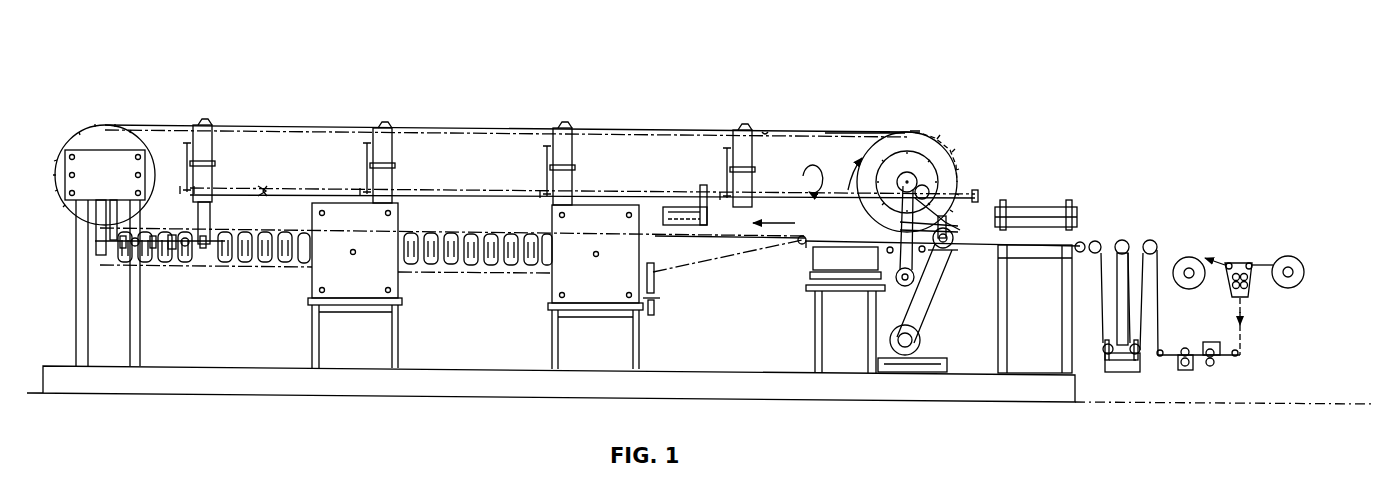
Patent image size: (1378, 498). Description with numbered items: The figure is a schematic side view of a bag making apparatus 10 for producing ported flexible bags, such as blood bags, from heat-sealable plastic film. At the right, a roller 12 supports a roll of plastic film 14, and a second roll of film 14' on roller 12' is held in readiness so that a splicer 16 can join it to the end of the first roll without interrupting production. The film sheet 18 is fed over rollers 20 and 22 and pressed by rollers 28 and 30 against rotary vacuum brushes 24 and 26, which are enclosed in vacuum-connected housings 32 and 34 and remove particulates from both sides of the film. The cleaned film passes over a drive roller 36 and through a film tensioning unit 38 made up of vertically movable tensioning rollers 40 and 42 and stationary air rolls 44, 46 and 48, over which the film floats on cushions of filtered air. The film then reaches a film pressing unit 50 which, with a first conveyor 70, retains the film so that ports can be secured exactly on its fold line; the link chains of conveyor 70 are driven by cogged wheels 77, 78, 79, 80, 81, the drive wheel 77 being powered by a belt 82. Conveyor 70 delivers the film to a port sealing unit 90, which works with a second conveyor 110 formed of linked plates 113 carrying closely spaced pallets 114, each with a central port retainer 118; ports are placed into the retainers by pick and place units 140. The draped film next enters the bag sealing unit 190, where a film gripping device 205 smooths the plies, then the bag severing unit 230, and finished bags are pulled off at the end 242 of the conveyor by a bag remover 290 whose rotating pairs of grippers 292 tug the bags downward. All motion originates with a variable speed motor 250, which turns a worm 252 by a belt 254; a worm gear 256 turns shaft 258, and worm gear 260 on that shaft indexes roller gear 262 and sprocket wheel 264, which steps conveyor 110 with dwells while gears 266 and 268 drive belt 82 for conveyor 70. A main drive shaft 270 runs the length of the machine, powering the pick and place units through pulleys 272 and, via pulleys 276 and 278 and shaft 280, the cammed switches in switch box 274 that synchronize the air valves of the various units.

The bag making apparatus 10 is at (188, 70).
The roller 12 is at (1299, 250).
The roller 12' is at (1183, 293).
The roll of plastic film 14 is at (1307, 263).
The second roll of film 14' is at (1213, 294).
The splicer 16 is at (1252, 297).
The film sheet 18 is at (742, 250).
The roller 20 is at (1249, 262).
The roller 22 is at (1237, 356).
The rotary vacuum brush 24 is at (1215, 360).
The rotary vacuum brush 26 is at (1185, 372).
The roller 28 is at (1212, 362).
The roller 30 is at (1174, 341).
The housing 32 is at (1220, 345).
The housing 34 is at (1190, 368).
The drive roller 36 is at (1160, 357).
The film tensioning unit 38 is at (1120, 372).
The tensioning roller 40 is at (1127, 352).
The tensioning roller 42 is at (1107, 354).
The stationary air roll 44 is at (1153, 240).
The stationary air roll 46 is at (1124, 240).
The stationary air roll 48 is at (1096, 240).
The film pressing unit 50 is at (1050, 207).
The first conveyor 70 is at (1008, 258).
The cogged drive wheel 77 is at (904, 286).
The cogged wheel 78 is at (884, 250).
The cogged wheel 79 is at (800, 246).
The cogged wheel 80 is at (895, 272).
The cogged wheel 81 is at (1080, 241).
The belt 82 is at (958, 228).
The port sealing unit 90 is at (806, 268).
The second conveyor 110 is at (790, 128).
The linked plates 113 is at (765, 130).
The pallet 114 is at (855, 133).
The port retainer 118 is at (878, 132).
The pick and place unit 140 is at (206, 121).
The bag sealing unit 190 is at (597, 203).
The film gripping device 205 is at (658, 293).
The bag severing unit 230 is at (402, 214).
The end of conveyor 242 is at (96, 225).
The variable speed motor 250 is at (920, 340).
The worm 252 is at (954, 252).
The belt 254 is at (926, 302).
The worm gear 256 is at (956, 238).
The shaft 258 is at (778, 210).
The worm gear 260 is at (948, 215).
The roller gear 262 is at (915, 178).
The sprocket wheel 264 is at (852, 178).
The gear 266 is at (924, 190).
The gear 268 is at (935, 200).
The main drive shaft 270 is at (776, 192).
The pulleys 272 is at (186, 148).
The switch box 274 is at (706, 232).
The pulley 276 is at (706, 215).
The pulley 278 is at (700, 208).
The shaft 280 is at (672, 216).
The bag remover 290 is at (168, 272).
The bag gripper 292 is at (146, 252).